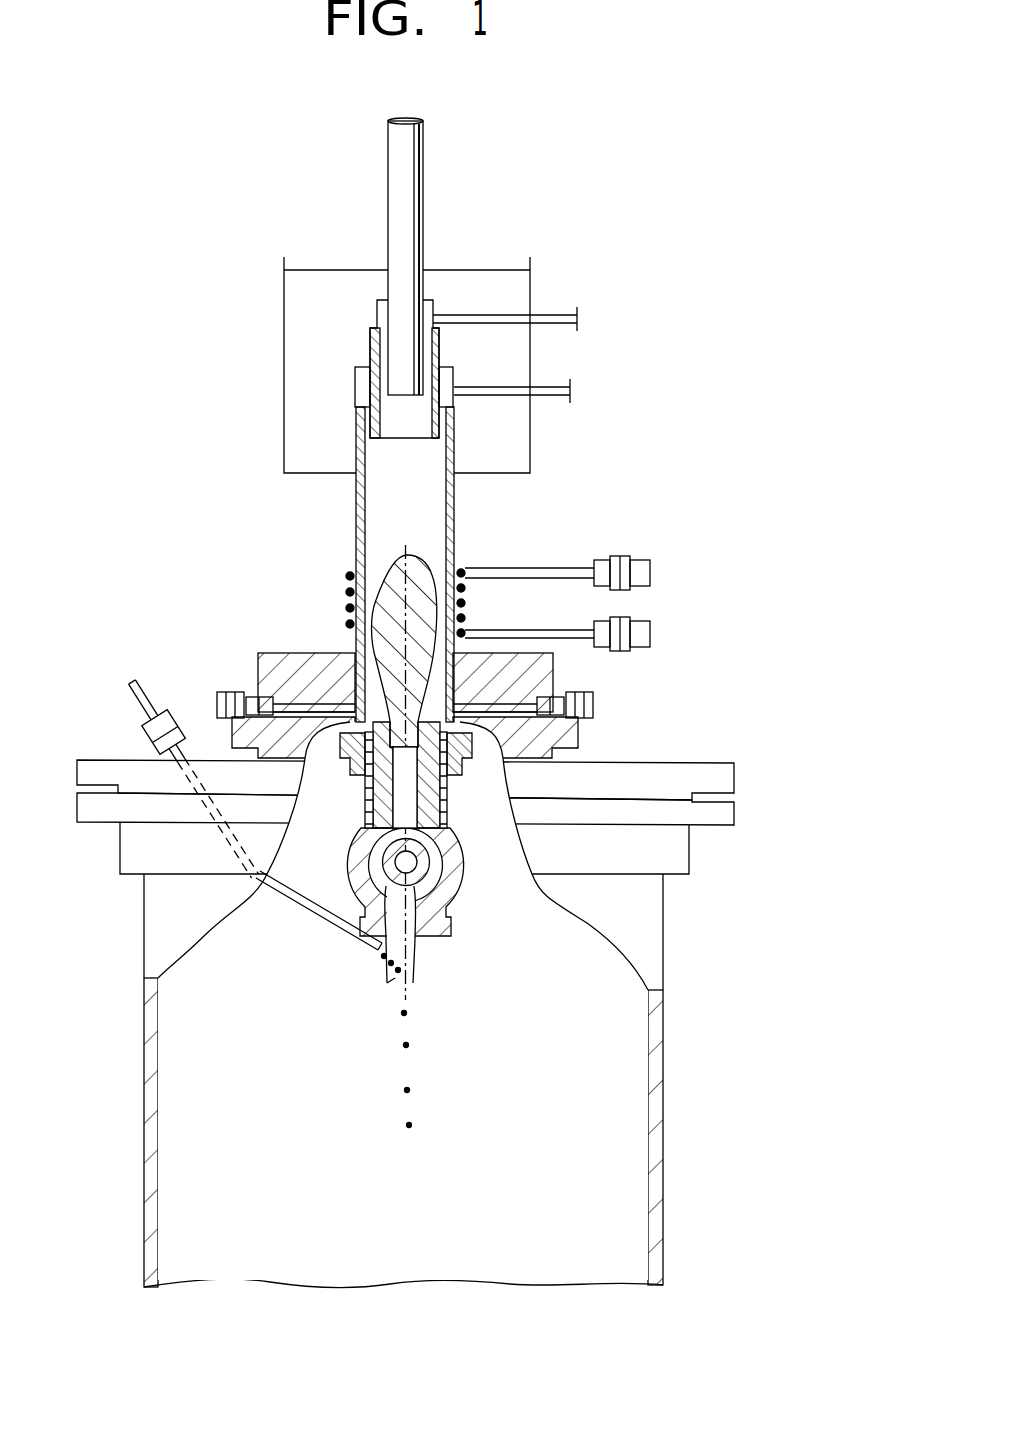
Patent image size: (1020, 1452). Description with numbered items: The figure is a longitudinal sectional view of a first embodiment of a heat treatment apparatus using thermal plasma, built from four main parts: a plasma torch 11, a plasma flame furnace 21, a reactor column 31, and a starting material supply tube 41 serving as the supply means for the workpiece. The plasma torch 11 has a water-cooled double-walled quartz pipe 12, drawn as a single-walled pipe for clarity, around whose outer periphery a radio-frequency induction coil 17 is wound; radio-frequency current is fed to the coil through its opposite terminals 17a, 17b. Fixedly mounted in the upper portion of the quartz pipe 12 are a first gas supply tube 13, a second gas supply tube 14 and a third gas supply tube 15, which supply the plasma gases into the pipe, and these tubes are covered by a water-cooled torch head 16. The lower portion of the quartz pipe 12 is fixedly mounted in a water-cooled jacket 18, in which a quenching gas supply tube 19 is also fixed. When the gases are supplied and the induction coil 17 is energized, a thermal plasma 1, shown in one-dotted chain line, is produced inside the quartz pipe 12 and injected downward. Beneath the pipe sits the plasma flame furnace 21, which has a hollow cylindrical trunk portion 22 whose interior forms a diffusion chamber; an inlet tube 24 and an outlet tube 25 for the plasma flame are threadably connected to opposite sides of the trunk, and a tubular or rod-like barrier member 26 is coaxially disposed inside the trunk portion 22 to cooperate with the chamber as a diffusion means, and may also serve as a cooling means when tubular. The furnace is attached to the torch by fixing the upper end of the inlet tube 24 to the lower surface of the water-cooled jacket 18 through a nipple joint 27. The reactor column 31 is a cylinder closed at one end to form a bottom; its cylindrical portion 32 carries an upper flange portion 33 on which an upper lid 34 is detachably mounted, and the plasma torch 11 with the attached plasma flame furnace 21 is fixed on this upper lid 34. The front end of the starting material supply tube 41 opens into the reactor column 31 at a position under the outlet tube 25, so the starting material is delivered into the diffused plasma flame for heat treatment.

The thermal plasma 1 is at (432, 568).
The plasma torch 11 is at (553, 205).
The water-cooled double-walled quartz pipe 12 is at (356, 520).
The first gas supply tube 13 is at (425, 188).
The second gas supply tube 14 is at (577, 312).
The third gas supply tube 15 is at (572, 386).
The water-cooled torch head 16 is at (284, 370).
The radio-frequency induction coil 17 is at (346, 595).
The terminal 17a is at (660, 571).
The terminal 17b is at (660, 634).
The water-cooled jacket 18 is at (556, 672).
The quenching gas supply tube 19 is at (217, 697).
The plasma flame furnace 21 is at (482, 925).
The hollow cylindrical trunk portion 22 is at (350, 862).
The inlet tube 24 is at (365, 795).
The outlet tube 25 is at (443, 973).
The barrier member 26 is at (430, 867).
The nipple joint 27 is at (455, 775).
The reactor column 31 is at (712, 953).
The cylindrical portion 32 is at (658, 1123).
The upper flange portion 33 is at (692, 852).
The upper lid 34 is at (735, 780).
The starting material supply tube 41 is at (130, 682).